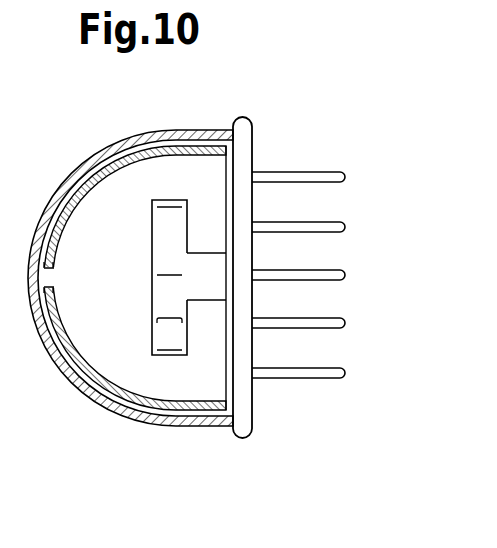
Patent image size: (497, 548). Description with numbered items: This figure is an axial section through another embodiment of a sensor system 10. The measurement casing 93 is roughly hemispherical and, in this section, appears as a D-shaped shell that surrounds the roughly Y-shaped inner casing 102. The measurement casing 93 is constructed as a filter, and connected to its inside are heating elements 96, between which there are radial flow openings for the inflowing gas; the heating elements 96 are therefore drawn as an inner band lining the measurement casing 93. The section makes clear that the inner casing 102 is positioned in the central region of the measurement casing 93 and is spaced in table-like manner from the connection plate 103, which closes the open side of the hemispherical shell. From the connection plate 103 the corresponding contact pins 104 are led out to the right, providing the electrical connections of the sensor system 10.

The sensor system 10 is at (232, 103).
The measurement casing 93 is at (127, 137).
The heating elements 96 is at (68, 180).
The inner casing 102 is at (152, 268).
The connection plate 103 is at (237, 151).
The contact pins 104 is at (332, 225).